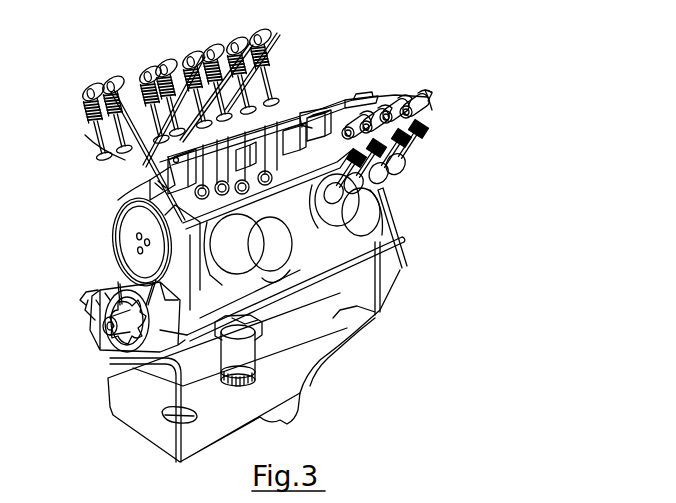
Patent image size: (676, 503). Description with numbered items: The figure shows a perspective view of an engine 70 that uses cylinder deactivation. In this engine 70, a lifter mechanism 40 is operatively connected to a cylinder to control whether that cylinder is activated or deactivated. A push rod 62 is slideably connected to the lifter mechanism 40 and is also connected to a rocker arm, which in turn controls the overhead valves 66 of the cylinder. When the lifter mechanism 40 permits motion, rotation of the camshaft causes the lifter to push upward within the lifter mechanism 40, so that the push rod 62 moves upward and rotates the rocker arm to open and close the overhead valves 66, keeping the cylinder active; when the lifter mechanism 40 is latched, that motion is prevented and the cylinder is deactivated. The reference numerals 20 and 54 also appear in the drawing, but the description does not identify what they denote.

The lifter 20 is at (210, 95).
The push rod 62 is at (293, 128).
The lifter mechanism 40 is at (156, 184).
The overhead valves 66 is at (100, 131).
The rocker arm assembly 54 is at (433, 146).
The engine 70 is at (451, 72).